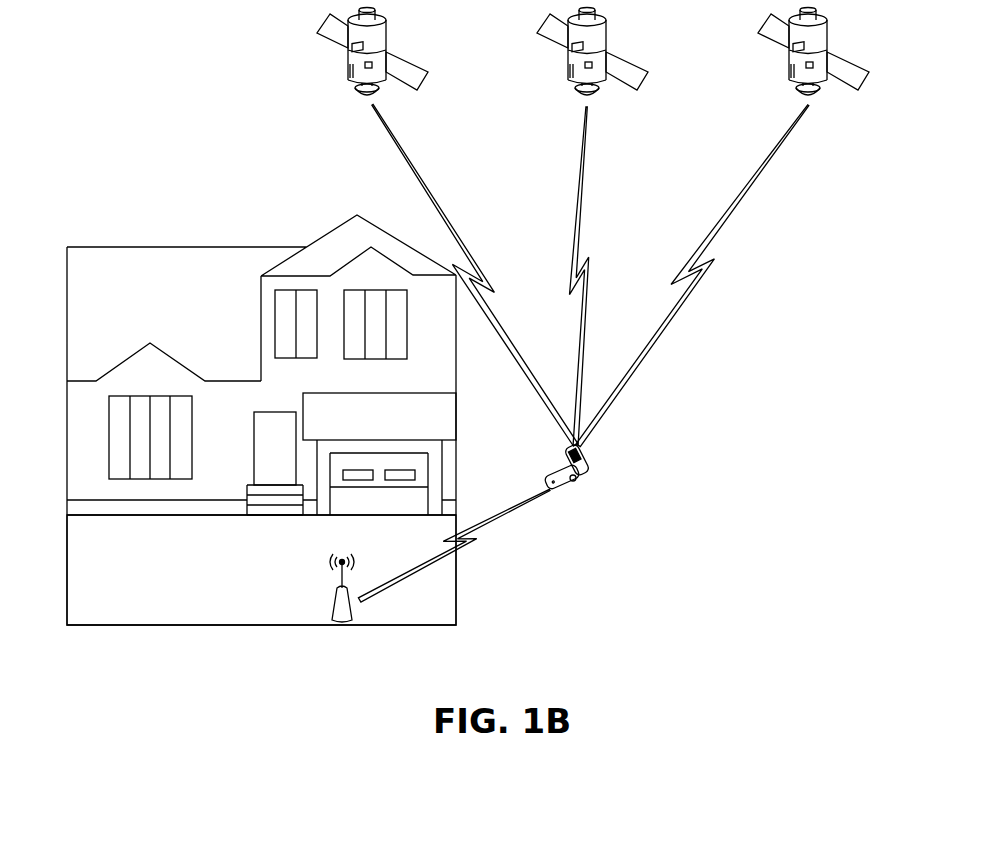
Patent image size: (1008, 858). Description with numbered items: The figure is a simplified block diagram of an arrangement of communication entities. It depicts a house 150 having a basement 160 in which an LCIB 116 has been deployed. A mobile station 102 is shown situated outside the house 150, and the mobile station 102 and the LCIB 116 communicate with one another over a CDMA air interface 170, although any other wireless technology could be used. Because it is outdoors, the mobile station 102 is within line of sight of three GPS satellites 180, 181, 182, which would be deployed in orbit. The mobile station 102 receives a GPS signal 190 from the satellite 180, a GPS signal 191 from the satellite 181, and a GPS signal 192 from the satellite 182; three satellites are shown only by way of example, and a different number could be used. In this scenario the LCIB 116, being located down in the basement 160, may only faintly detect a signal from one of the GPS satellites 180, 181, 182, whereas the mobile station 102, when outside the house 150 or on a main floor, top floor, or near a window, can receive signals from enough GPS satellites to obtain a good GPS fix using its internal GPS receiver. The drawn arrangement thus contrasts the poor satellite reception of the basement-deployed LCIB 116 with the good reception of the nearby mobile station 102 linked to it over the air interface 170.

The mobile station 102 is at (580, 485).
The LCIB 116 is at (335, 592).
The house 150 is at (185, 296).
The basement 160 is at (275, 580).
The CDMA air interface 170 is at (479, 530).
The GPS satellite 180 is at (360, 95).
The GPS satellite 181 is at (580, 98).
The GPS satellite 182 is at (851, 98).
The GPS signal 190 is at (407, 162).
The GPS signal 191 is at (584, 195).
The GPS signal 192 is at (680, 305).